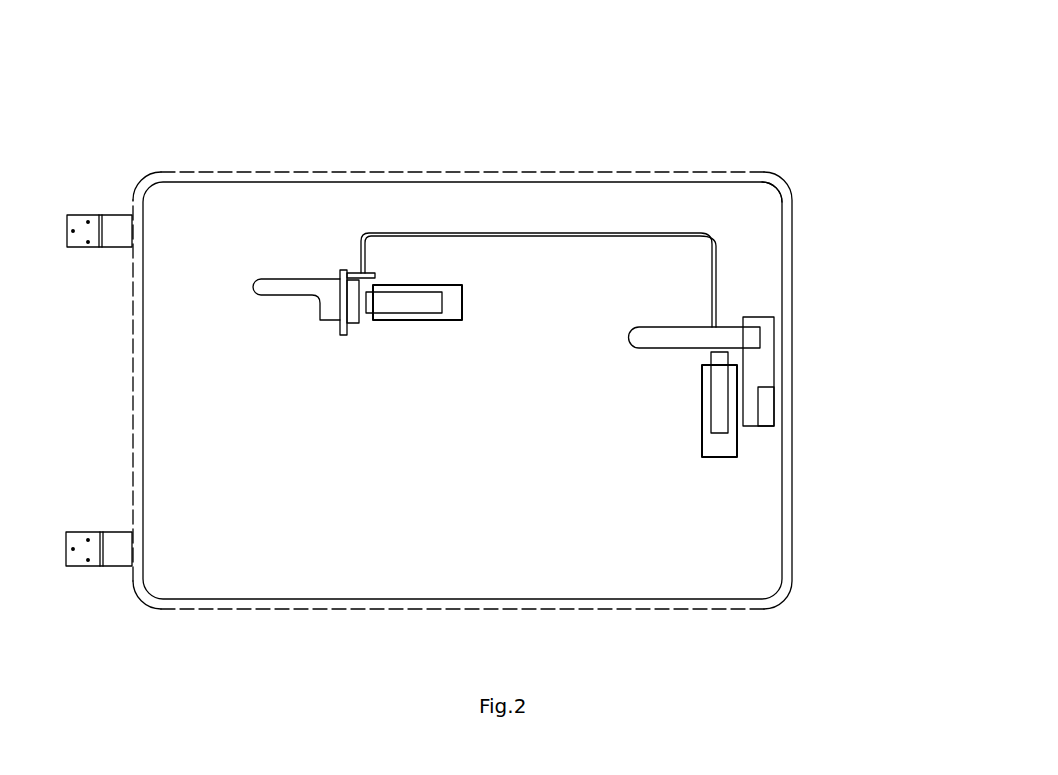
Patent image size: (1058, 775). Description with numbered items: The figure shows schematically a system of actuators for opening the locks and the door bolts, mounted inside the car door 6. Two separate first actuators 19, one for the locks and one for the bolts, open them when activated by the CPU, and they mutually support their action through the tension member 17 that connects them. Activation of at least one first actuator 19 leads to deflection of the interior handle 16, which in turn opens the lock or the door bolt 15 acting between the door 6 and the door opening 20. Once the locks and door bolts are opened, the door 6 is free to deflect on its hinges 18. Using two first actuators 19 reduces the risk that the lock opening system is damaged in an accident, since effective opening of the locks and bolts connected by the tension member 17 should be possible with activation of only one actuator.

The door 6 is at (341, 161).
The door bolt 15 is at (786, 381).
The interior handle 16 is at (321, 333).
The tension member 17 is at (728, 247).
The hinges 18 is at (91, 204).
The first actuators 19 is at (698, 374).
The door opening 20 is at (784, 175).